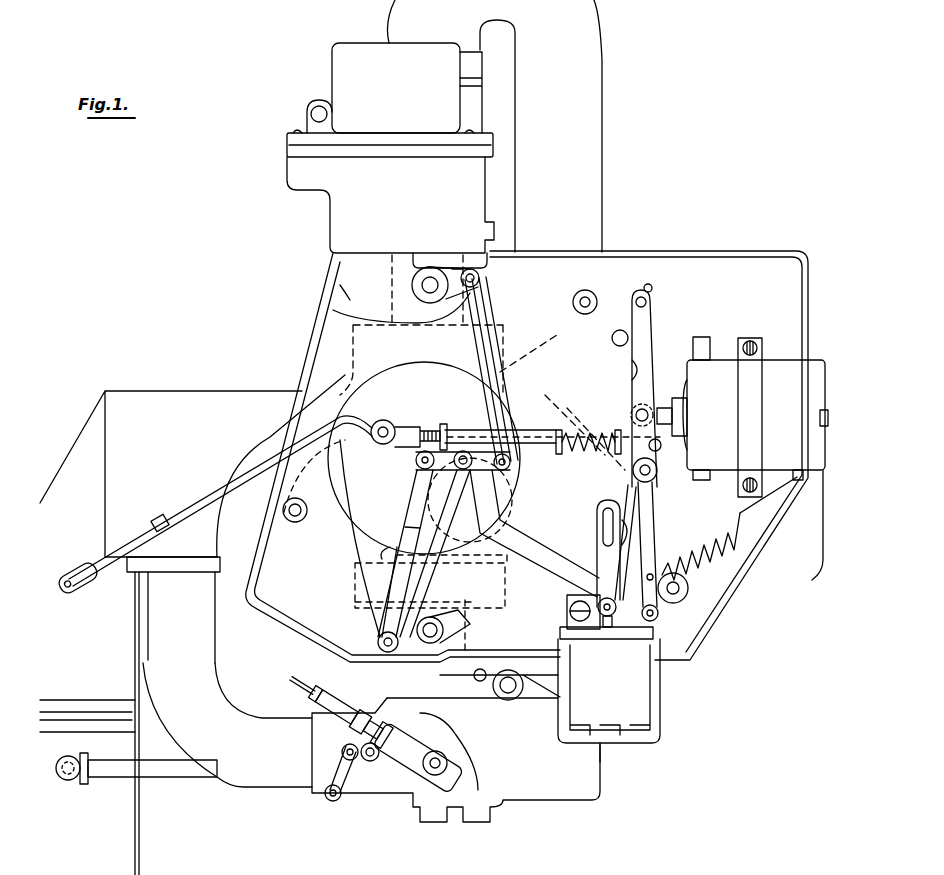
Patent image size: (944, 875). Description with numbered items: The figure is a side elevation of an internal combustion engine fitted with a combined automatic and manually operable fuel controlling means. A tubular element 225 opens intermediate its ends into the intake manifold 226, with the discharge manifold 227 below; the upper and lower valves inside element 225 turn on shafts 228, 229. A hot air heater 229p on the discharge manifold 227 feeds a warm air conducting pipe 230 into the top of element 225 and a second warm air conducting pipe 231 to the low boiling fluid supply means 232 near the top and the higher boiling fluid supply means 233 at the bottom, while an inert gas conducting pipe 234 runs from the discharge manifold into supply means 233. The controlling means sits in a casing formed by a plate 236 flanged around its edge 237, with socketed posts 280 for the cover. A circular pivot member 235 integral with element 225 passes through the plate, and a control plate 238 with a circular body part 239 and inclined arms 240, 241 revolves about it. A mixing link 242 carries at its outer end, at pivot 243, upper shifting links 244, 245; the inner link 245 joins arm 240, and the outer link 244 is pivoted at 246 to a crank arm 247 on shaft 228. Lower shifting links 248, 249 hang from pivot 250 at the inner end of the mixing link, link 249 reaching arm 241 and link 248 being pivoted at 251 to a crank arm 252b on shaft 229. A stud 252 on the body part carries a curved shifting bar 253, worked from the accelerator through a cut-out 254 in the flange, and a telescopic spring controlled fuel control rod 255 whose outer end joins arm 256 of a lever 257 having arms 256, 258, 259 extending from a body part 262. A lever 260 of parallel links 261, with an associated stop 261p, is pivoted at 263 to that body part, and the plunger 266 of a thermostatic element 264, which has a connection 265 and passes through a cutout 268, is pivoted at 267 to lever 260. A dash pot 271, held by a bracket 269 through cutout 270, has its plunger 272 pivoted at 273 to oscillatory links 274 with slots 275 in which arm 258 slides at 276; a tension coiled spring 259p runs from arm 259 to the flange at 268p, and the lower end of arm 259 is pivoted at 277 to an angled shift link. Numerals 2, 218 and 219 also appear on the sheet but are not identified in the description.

The machine 2 is at (350, 295).
The hidden member 218 is at (541, 563).
The link bar 219 is at (462, 452).
The tubular element 225 is at (503, 510).
The intake manifold 226 is at (663, 408).
The discharge manifold 227 is at (713, 550).
The upper valve shaft 228 is at (418, 272).
The lower valve shaft 229 is at (458, 635).
The hot air heater 229p is at (153, 400).
The warm air conducting pipe 230 is at (585, 88).
The warm air conducting pipe 231 is at (252, 760).
The low boiling fluid supply means 232 is at (340, 187).
The higher boiling fluid supply means 233 is at (520, 773).
The inert gas conducting pipe 234 is at (165, 770).
The pivot member 235 is at (413, 476).
The plate 236 is at (380, 572).
The flange 237 is at (271, 617).
The control plate 238 is at (540, 403).
The circular body part 239 is at (424, 458).
The upper arm 240 is at (488, 301).
The lower arm 241 is at (355, 568).
The mixing link 242 is at (445, 478).
The pivot 243 is at (540, 417).
The outer upper shifting link 244 is at (498, 368).
The inner upper shifting link 245 is at (497, 320).
The pivot 246 is at (481, 276).
The crank arm 247 is at (453, 270).
The lower shifting link 248 is at (410, 527).
The lower shifting link 249 is at (385, 577).
The pivot 250 is at (418, 462).
The pivot 251 is at (378, 642).
The stud 252 is at (384, 418).
The crank arm 252b is at (374, 733).
The curved shifting bar 253 is at (218, 482).
The cut-out 254 is at (288, 425).
The fuel control rod 255 is at (482, 437).
The lever arm 256 is at (657, 445).
The lever 257 is at (664, 492).
The lever arm 258 is at (633, 470).
The lever arm 259 is at (655, 533).
The tension coiled spring 259p is at (740, 523).
The lever 260 is at (644, 343).
The links 261 is at (633, 372).
The stop 261p is at (612, 334).
The body part 262 is at (653, 505).
The pivot 263 is at (657, 470).
The thermostatic element 264 is at (775, 368).
The connection means 265 is at (818, 418).
The plunger 266 is at (750, 416).
The pivot 267 is at (636, 415).
The cutout 268 is at (768, 496).
The spring anchor 268p is at (797, 470).
The bracket 269 is at (675, 606).
The cutout 270 is at (650, 667).
The dash pot 271 is at (608, 700).
The plunger 272 is at (602, 630).
The pivot 273 is at (568, 598).
The oscillatory links 274 is at (588, 548).
The slots 275 is at (598, 513).
The sliding connection 276 is at (623, 500).
The pivot 277 is at (607, 607).
The socketed posts 280 is at (597, 288).